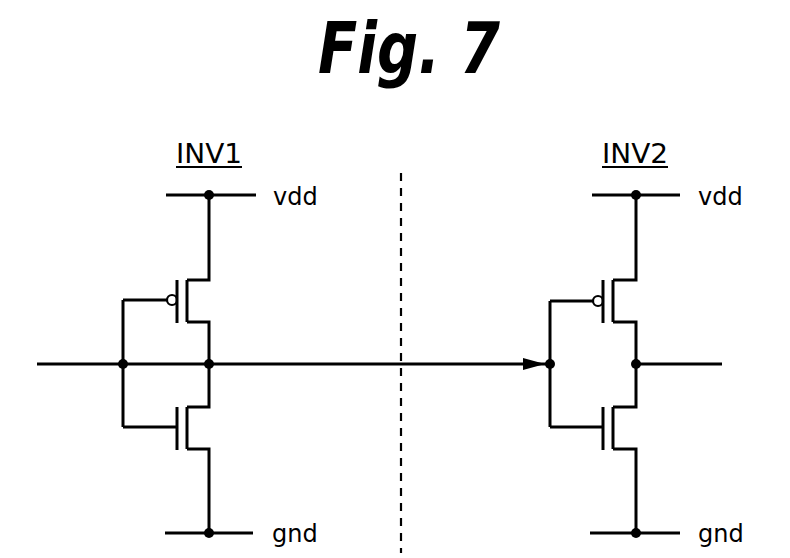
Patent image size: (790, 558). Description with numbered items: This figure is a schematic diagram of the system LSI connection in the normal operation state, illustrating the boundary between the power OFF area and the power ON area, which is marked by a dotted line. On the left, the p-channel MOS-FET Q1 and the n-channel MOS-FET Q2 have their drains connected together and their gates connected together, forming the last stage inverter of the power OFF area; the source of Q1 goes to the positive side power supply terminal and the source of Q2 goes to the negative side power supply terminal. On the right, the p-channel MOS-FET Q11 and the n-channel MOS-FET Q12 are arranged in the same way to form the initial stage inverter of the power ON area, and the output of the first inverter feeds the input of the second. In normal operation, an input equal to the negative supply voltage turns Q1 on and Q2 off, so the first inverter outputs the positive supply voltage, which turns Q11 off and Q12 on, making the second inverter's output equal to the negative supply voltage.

The p-channel MOS-FET Q1 is at (177, 283).
The n-channel MOS-FET Q2 is at (177, 438).
The p-channel MOS-FET Q11 is at (603, 287).
The n-channel MOS-FET Q12 is at (602, 438).